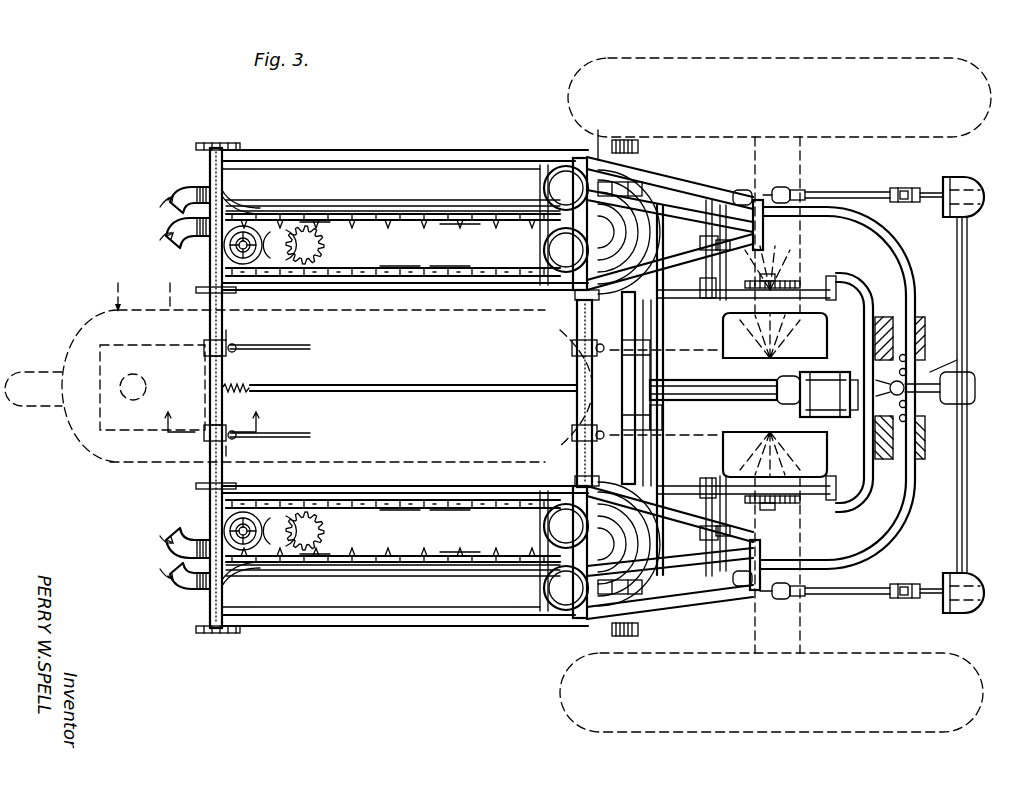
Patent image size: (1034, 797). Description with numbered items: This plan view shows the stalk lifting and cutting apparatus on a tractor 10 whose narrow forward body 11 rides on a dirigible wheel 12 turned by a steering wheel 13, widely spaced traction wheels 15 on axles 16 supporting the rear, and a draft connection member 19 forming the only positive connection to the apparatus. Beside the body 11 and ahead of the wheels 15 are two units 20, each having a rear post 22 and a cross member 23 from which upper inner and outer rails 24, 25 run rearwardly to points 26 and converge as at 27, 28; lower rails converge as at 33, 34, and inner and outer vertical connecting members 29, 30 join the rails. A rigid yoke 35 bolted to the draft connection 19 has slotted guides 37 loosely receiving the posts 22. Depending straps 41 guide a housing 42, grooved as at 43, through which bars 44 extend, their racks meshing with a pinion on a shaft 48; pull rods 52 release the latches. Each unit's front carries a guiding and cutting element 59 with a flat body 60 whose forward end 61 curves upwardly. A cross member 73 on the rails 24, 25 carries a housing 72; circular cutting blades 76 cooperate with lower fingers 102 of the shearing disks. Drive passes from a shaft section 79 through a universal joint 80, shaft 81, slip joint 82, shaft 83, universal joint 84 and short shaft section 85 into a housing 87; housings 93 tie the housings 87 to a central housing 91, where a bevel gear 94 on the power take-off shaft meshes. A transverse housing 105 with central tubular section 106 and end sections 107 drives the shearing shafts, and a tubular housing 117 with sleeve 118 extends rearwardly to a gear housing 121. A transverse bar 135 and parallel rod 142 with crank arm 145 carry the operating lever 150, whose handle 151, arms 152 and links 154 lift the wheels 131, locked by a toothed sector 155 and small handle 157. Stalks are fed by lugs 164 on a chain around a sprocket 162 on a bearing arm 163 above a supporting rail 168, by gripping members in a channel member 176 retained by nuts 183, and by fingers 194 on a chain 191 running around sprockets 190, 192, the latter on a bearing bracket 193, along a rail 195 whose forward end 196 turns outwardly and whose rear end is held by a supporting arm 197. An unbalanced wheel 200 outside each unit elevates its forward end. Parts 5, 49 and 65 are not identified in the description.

The bolt 5 is at (228, 334).
The tractor 10 is at (113, 288).
The forward body 11 is at (327, 363).
The dirigible wheel 12 is at (30, 370).
The steering wheel 13 is at (776, 270).
The traction wheels 15 is at (801, 58).
The axles 16 is at (211, 421).
The draft connection member 19 is at (893, 400).
The stalk lifting and cutting mechanism 20 is at (302, 150).
The rear post 22 is at (742, 190).
The cross member 23 is at (208, 162).
The upper inner rail 24 is at (505, 290).
The upper outer rail 25 is at (362, 620).
The points 26 is at (560, 494).
The converging portion of inner rail 27 is at (688, 250).
The converging portion of outer rail 28 is at (705, 200).
The inner vertical connecting member 29 is at (622, 320).
The outer vertical connecting member 30 is at (586, 158).
The converging portion of lower inner rail 33 is at (698, 292).
The converging portion of lower outer rail 34 is at (688, 183).
The yoke 35 is at (905, 258).
The slotted guides 37 is at (770, 216).
The depending strap 41 is at (204, 350).
The housing 42 is at (208, 387).
The grooves 43 is at (234, 352).
The bars 44 is at (210, 326).
The shaft 48 is at (415, 391).
The spring 49 is at (250, 388).
The pull rods 52 is at (262, 346).
The guiding and cutting element 59 is at (156, 388).
The body portion 60 is at (264, 204).
The forward end 61 is at (196, 196).
The bar 65 is at (462, 584).
The housing 72 is at (597, 133).
The cross member 73 is at (578, 170).
The circular cutting blades 76 is at (544, 191).
The short shaft section 79 is at (606, 178).
The universal joint 80 is at (640, 182).
The shaft 81 is at (775, 187).
The slip joint 82 is at (804, 190).
The shaft 83 is at (855, 192).
The universal joint 84 is at (899, 188).
The short shaft section 85 is at (931, 192).
The housing 87 is at (970, 190).
The housing 91 is at (976, 390).
The housing 93 is at (968, 312).
The bevel gear 94 is at (918, 405).
The lower fingers 102 is at (544, 252).
The housing 105 is at (652, 342).
The central tubular section 106 is at (662, 418).
The end sections 107 is at (645, 322).
The tubular housing 117 is at (710, 380).
The sleeve 118 is at (652, 372).
The gear housing 121 is at (800, 376).
The wheels 131 is at (728, 320).
The bar 135 is at (708, 238).
The rod 142 is at (722, 274).
The crank arm 145 is at (772, 395).
The operating lever 150 is at (876, 283).
The handle 151 is at (950, 365).
The arms 152 is at (864, 216).
The link 154 is at (828, 280).
The toothed sector 155 is at (790, 280).
The small handle 157 is at (910, 370).
The sprocket 162 is at (330, 531).
The bearing arm 163 is at (325, 248).
The lugs 164 is at (348, 210).
The supporting rail 168 is at (465, 210).
The channel member 176 is at (400, 266).
The nut 183 is at (447, 266).
The sprocket 190 is at (546, 531).
The chain 191 is at (490, 510).
The sprocket 192 is at (252, 266).
The bearing bracket 193 is at (236, 250).
The fingers 194 is at (362, 210).
The rail 195 is at (405, 210).
The outwardly turned forward end 196 is at (230, 188).
The supporting arm 197 is at (538, 181).
The wheel 200 is at (224, 142).